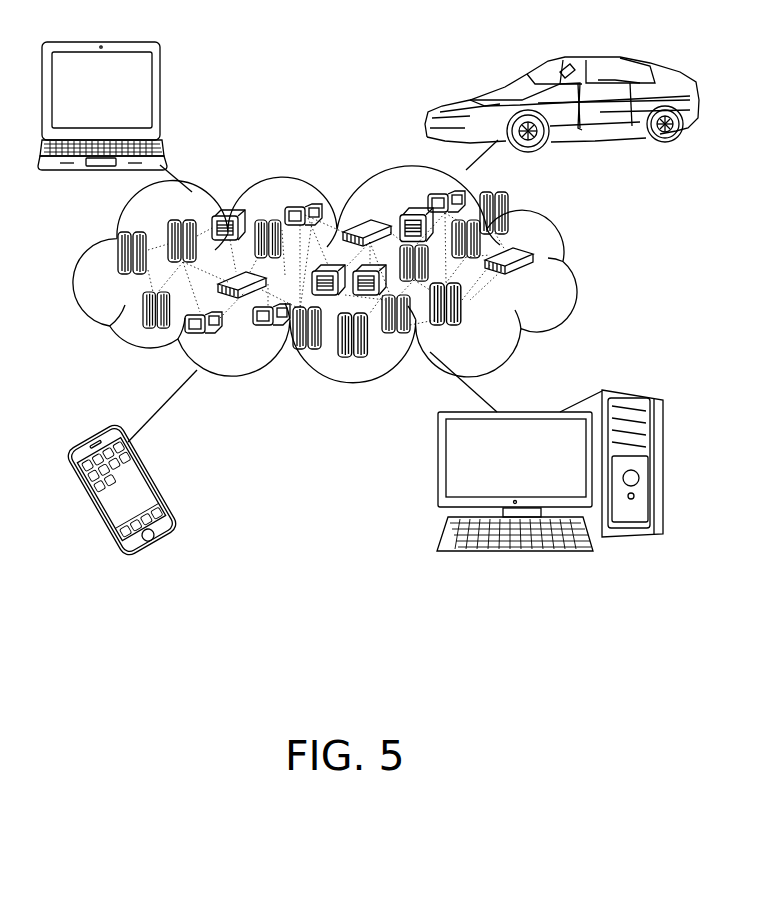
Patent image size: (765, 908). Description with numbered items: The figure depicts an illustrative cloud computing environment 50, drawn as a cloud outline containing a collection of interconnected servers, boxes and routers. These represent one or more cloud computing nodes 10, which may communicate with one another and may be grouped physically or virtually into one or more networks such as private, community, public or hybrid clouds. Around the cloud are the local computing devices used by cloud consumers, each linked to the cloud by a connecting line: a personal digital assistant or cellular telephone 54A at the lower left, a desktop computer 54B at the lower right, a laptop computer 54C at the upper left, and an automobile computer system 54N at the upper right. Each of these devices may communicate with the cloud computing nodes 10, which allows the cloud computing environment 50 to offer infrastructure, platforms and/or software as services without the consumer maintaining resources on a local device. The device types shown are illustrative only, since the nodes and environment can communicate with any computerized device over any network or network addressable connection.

The cloud computing node 10 is at (536, 277).
The cloud computing environment 50 is at (345, 274).
The personal digital assistant or cellular telephone 54A is at (140, 484).
The desktop computer 54B is at (583, 392).
The laptop computer 54C is at (160, 101).
The automobile computer system 54N is at (428, 112).